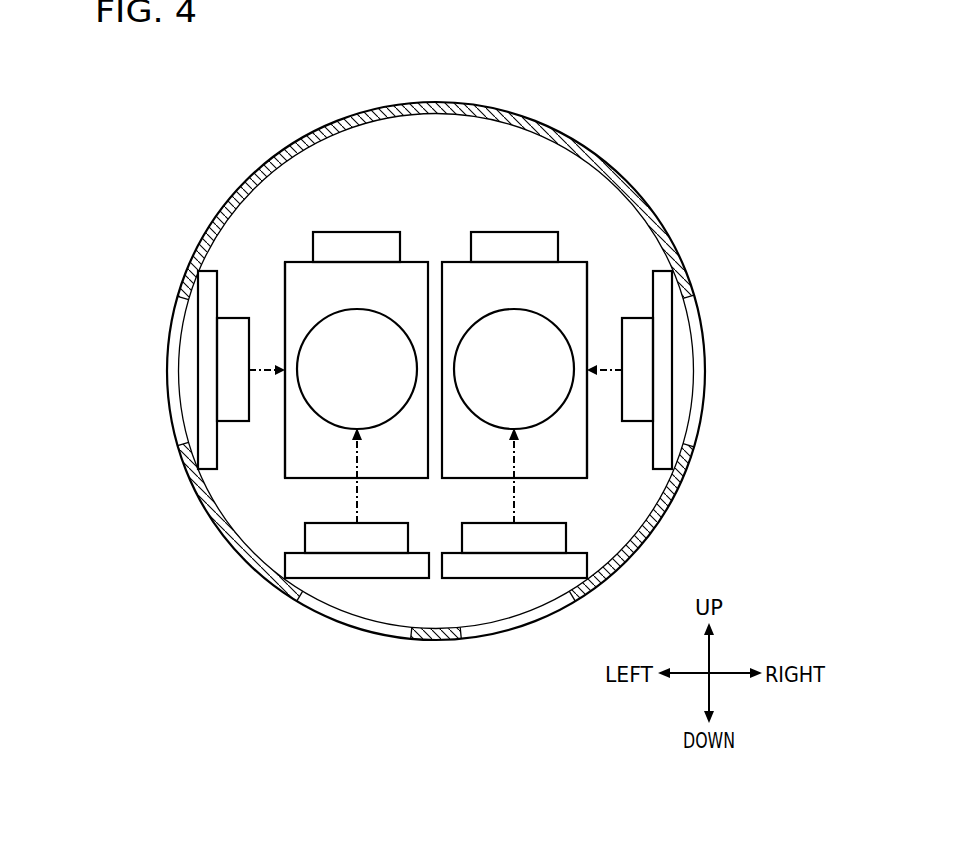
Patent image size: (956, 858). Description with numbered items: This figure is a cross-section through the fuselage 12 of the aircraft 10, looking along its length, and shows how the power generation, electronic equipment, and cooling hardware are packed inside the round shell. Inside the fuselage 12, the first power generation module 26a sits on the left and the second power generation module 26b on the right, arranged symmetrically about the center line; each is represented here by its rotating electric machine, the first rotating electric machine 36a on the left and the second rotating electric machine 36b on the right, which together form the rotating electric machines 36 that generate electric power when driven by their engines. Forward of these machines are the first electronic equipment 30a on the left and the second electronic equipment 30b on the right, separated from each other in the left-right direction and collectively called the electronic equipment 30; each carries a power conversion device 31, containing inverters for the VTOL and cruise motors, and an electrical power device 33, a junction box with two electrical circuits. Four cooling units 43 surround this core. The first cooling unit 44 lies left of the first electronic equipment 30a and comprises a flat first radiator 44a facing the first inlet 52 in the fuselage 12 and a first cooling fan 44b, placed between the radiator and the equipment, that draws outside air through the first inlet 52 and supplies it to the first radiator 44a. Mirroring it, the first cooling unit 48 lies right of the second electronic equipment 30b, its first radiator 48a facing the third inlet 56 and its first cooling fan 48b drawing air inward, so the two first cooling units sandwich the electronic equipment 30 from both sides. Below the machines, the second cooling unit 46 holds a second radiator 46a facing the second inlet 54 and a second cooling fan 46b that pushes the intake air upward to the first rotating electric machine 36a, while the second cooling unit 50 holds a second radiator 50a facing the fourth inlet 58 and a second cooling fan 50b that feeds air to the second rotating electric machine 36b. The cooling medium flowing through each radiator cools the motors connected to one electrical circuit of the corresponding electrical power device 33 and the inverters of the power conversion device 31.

The image forming apparatus / developing device 10 is at (143, 97).
The fuselage 12 is at (582, 130).
The first power generation module 26a is at (361, 248).
The second power generation module 26b is at (509, 248).
The electronic equipment 30 is at (436, 312).
The first electronic equipment 30a is at (416, 272).
The second electronic equipment 30b is at (514, 332).
The power conversion device 31 is at (335, 238).
The electrical power device 33 is at (285, 279).
The rotating electric machines 36 is at (413, 339).
The first rotating electric machine 36a is at (332, 415).
The second rotating electric machine 36b is at (540, 415).
The cooling units 43 is at (437, 509).
The first cooling unit 44 is at (156, 370).
The first radiator 44a is at (207, 332).
The first cooling fan 44b is at (233, 372).
The second cooling unit 46 is at (357, 588).
The second radiator 46a is at (373, 568).
The second cooling fan 46b is at (341, 541).
The first cooling unit 48 is at (716, 370).
The first radiator 48a is at (663, 333).
The first cooling fan 48b is at (637, 372).
The second cooling unit 50 is at (514, 588).
The second radiator 50a is at (496, 568).
The second cooling fan 50b is at (528, 541).
The first inlet 52 is at (177, 426).
The second inlet 54 is at (317, 604).
The third inlet 56 is at (690, 425).
The fourth inlet 58 is at (553, 605).